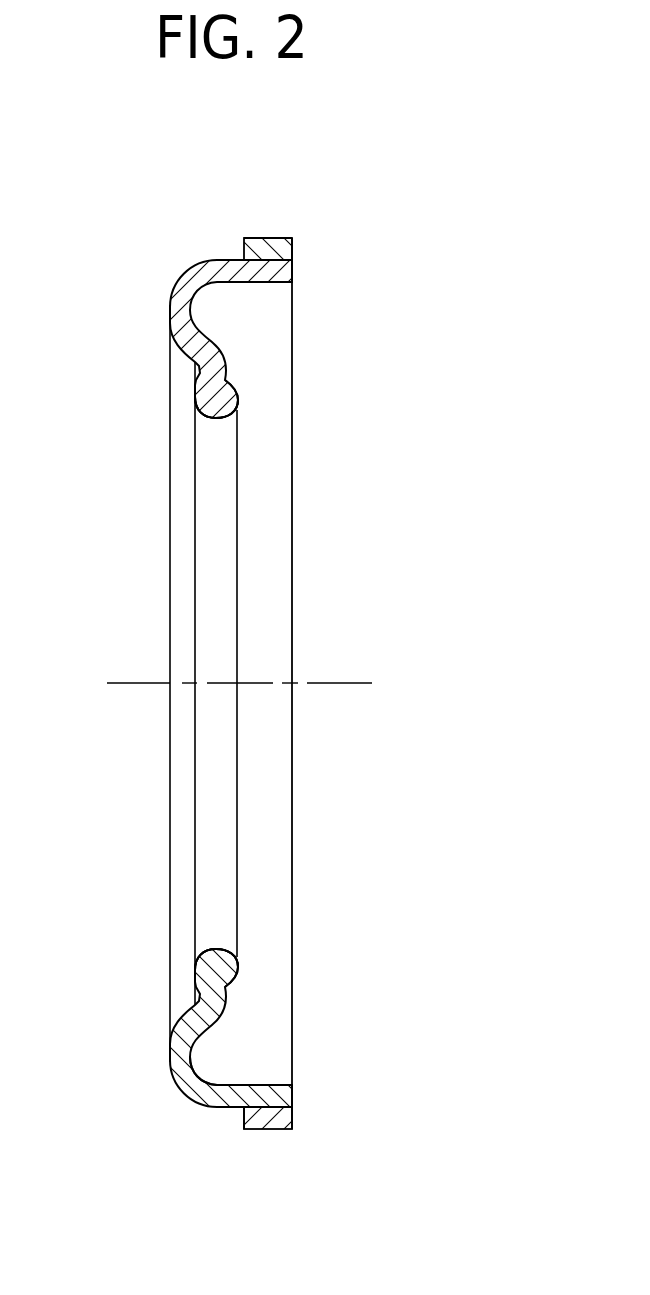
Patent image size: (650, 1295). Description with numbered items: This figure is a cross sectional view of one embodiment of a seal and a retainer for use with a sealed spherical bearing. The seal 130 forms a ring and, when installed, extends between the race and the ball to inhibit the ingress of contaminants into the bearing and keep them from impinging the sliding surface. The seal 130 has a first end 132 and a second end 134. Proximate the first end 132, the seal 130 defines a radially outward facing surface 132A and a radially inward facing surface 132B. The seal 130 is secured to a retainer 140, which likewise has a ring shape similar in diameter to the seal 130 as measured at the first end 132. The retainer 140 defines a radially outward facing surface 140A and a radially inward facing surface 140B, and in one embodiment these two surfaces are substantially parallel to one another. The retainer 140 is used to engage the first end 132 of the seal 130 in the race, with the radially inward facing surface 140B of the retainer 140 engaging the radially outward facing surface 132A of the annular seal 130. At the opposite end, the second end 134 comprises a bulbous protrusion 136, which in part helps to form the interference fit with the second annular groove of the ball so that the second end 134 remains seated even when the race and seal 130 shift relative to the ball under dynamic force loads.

The seal 130 is at (193, 278).
The first end 132 is at (273, 277).
The radially outward facing surface 132A is at (247, 1130).
The radially inward facing surface 132B is at (247, 1083).
The second end 134 is at (213, 417).
The bulbous protrusion 136 is at (210, 393).
The retainer 140 is at (283, 238).
The radially outward facing surface 140A is at (257, 238).
The radially inward facing surface 140B is at (290, 275).